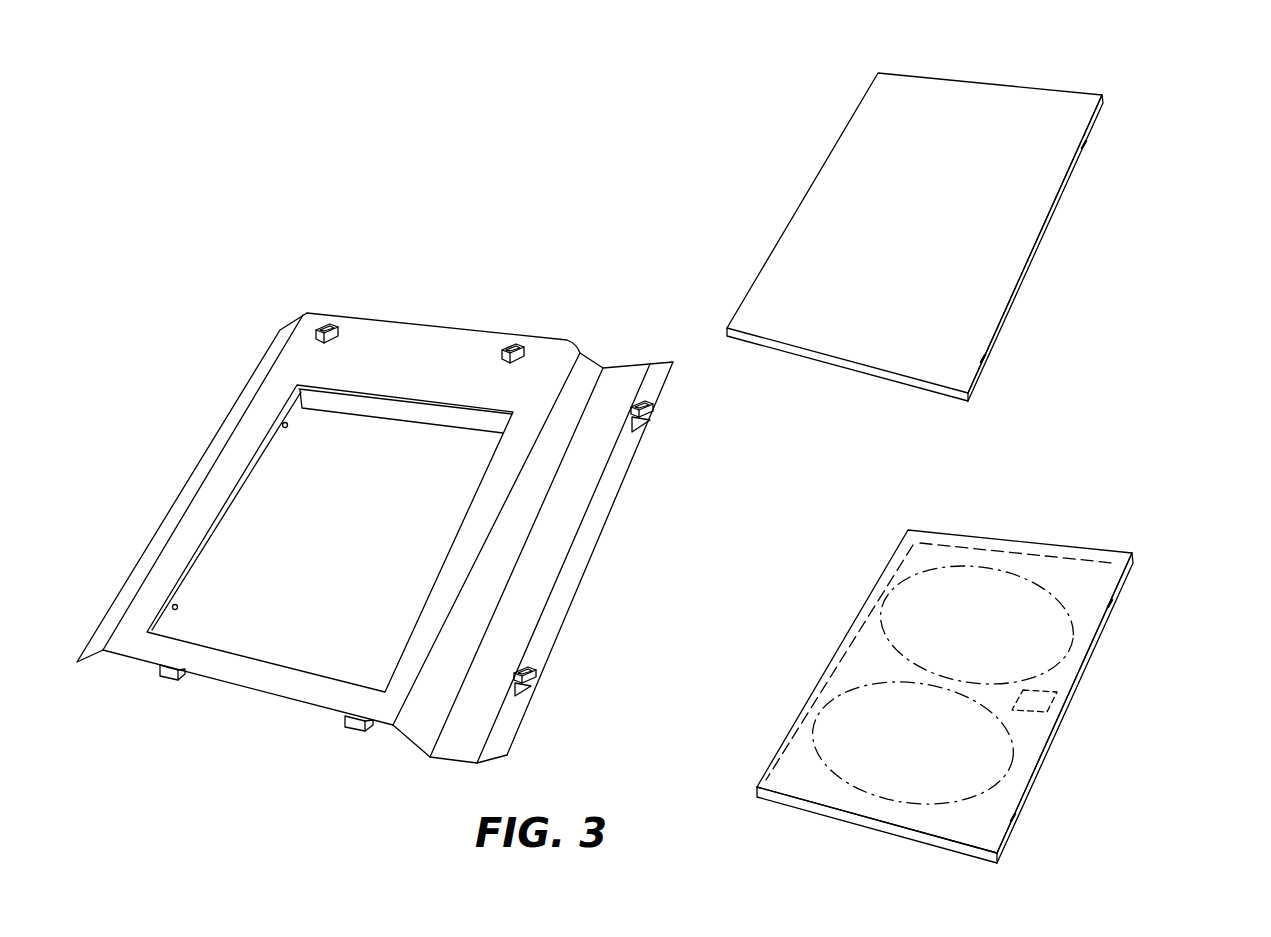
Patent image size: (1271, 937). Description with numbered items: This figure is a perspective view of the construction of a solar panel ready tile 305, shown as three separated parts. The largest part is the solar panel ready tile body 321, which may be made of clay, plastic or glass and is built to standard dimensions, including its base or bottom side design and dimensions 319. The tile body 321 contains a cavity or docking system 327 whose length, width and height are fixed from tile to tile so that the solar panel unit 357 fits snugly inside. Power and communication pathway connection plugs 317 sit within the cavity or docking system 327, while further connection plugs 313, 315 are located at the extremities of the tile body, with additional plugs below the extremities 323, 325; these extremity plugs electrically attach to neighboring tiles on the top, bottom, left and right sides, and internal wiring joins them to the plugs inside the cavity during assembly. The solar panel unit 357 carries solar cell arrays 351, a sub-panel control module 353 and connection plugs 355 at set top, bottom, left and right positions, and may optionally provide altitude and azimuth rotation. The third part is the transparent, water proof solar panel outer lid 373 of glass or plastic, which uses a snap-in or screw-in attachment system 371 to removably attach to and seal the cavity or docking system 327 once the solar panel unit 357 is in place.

The speaker enclosure assembly 305 is at (1186, 64).
The power and communication pathway connection plug 313 is at (655, 413).
The power and communication pathway connection plug 315 is at (515, 344).
The power and communication pathway connection plug 317 is at (288, 426).
The base or bottom side design and dimensions 319 is at (170, 679).
The solar panel ready tile body 321 is at (603, 529).
The extremity of tile body 323 is at (248, 675).
The extremity of tile body 325 is at (140, 567).
The cavity or docking system 327 is at (245, 497).
The solar cell arrays 351 is at (927, 688).
The sub-panel control module 353 is at (1047, 710).
The connection plugs 355 is at (1015, 818).
The solar panel unit 357 is at (850, 820).
The snap-in or screw-in attachment system 371 is at (985, 359).
The water proof solar panel outer lid 373 is at (1053, 223).